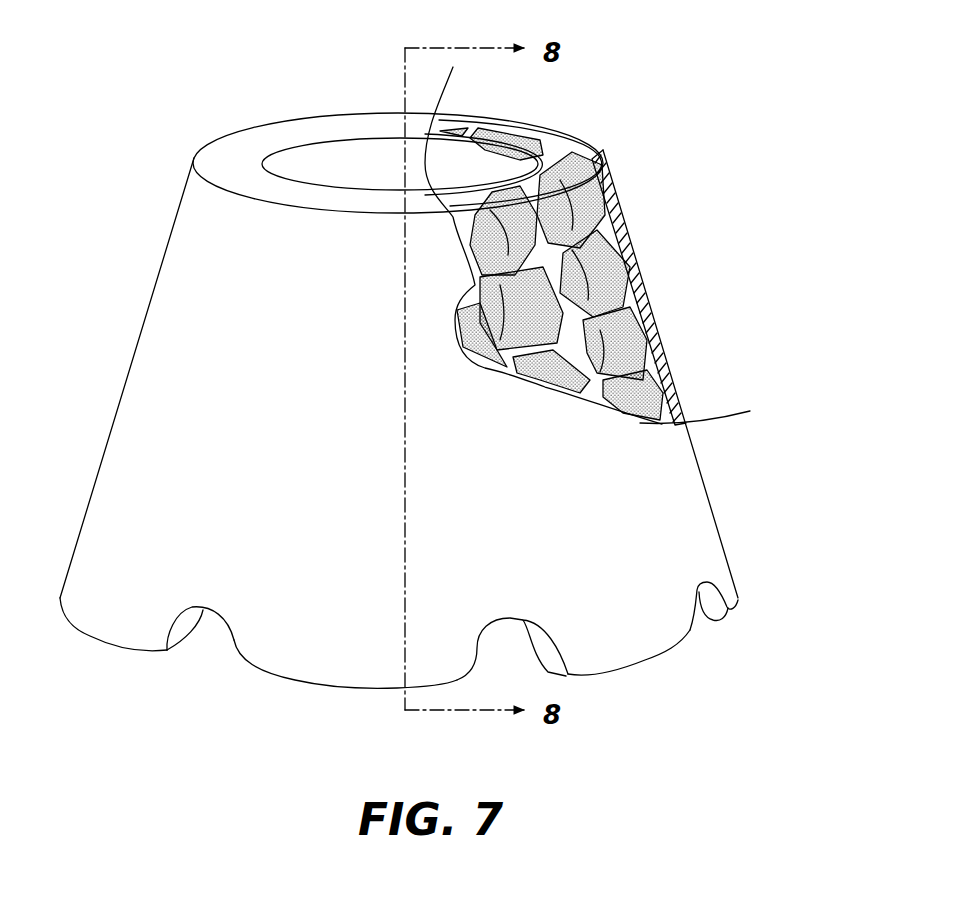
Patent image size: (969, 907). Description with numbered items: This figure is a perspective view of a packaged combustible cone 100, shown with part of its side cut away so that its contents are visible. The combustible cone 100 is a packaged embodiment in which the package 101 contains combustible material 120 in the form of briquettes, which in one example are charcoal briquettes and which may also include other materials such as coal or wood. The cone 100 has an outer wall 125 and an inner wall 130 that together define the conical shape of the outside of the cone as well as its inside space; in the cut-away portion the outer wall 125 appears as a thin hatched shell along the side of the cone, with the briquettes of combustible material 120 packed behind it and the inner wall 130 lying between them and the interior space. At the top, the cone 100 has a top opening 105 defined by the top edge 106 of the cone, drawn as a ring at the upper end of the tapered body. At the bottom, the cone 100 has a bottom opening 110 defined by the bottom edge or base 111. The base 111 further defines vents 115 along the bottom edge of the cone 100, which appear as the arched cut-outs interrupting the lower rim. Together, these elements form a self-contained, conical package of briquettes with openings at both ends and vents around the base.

The combustible cone 100 is at (118, 305).
The package 101 is at (163, 458).
The top opening 105 is at (323, 155).
The top edge 106 is at (238, 155).
The bottom opening 110 is at (284, 685).
The base 111 is at (80, 630).
The vents 115 is at (523, 667).
The combustible material 120 is at (627, 327).
The outer wall 125 is at (617, 195).
The inner wall 130 is at (547, 165).